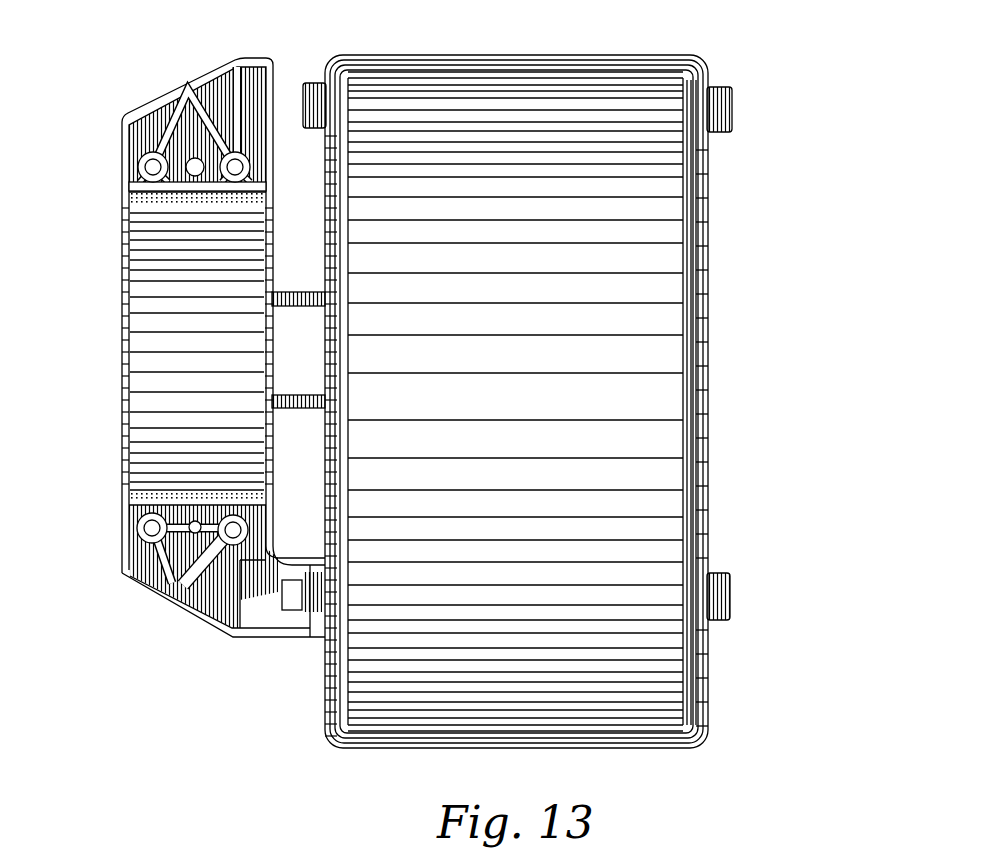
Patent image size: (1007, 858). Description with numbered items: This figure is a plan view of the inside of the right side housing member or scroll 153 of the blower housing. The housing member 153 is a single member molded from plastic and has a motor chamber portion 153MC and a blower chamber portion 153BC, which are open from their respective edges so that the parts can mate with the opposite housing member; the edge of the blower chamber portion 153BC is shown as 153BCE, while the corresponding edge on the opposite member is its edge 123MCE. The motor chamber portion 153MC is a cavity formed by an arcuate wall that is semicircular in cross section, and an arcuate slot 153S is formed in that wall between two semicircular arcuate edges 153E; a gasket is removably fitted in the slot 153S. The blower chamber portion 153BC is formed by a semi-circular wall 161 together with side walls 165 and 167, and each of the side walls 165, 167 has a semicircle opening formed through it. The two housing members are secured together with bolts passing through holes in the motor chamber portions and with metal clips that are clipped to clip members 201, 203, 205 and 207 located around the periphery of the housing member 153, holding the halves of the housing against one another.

The edge of motor chamber portion 123MCE is at (143, 112).
The arcuate edge 153E is at (274, 230).
The clip member 205 is at (311, 83).
The edge of blower chamber portion 153BCE is at (708, 76).
The clip member 201 is at (733, 108).
The second side housing member 153 is at (122, 232).
The semi-circular wall 161 is at (612, 310).
The blower chamber portion 153BC is at (710, 388).
The arcuate slot 153S is at (157, 348).
The clip member 203 is at (732, 593).
The motor chamber portion 153MC is at (118, 483).
The clip member 207 is at (302, 598).
The side wall 167 is at (327, 683).
The side wall 165 is at (708, 683).